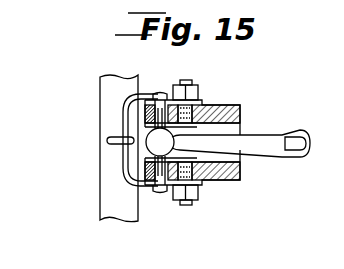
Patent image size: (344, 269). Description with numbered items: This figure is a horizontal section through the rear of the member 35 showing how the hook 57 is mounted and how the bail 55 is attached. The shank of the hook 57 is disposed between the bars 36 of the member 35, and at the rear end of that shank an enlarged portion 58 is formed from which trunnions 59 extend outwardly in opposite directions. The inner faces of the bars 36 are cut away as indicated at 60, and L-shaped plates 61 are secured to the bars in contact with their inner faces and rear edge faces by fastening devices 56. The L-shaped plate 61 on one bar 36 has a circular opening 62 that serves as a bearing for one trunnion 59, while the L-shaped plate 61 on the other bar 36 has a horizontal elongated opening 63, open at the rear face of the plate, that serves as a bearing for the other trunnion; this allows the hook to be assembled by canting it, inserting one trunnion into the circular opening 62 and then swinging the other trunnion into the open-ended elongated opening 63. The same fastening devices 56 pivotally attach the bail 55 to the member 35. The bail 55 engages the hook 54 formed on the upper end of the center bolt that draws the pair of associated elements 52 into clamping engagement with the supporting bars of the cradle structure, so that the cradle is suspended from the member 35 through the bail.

The member 35 is at (236, 99).
The bars 36 is at (238, 105).
The associated elements 52 is at (108, 89).
The hook 54 is at (107, 140).
The bail 55 is at (123, 157).
The fastening devices 56 is at (192, 84).
The hook 57 is at (252, 142).
The enlarged portion 58 is at (150, 148).
The trunnions 59 is at (156, 104).
The cut away 60 is at (160, 104).
The L-shaped plates 61 is at (213, 122).
The circular opening 62 is at (148, 117).
The elongated opening 63 is at (158, 162).